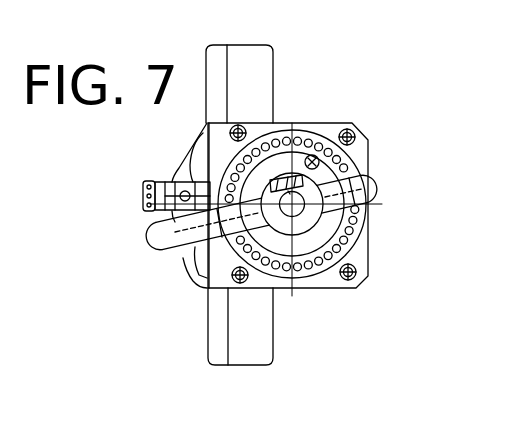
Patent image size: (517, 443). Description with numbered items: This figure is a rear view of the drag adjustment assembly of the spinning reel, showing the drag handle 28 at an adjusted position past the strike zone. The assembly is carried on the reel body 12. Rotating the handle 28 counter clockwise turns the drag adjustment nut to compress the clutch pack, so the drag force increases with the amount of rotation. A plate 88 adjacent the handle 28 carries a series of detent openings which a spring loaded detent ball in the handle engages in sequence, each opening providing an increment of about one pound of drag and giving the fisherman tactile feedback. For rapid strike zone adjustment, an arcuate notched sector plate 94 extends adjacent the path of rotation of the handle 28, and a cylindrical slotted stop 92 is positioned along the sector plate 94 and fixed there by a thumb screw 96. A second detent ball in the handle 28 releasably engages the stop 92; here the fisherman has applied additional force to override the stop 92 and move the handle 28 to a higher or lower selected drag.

The reel body 12 is at (271, 67).
The plate 88 is at (322, 128).
The arcuate notched sector plate 94 is at (198, 283).
The drag handle 28 is at (158, 253).
The stop 92 is at (168, 182).
The thumb screw 96 is at (143, 198).